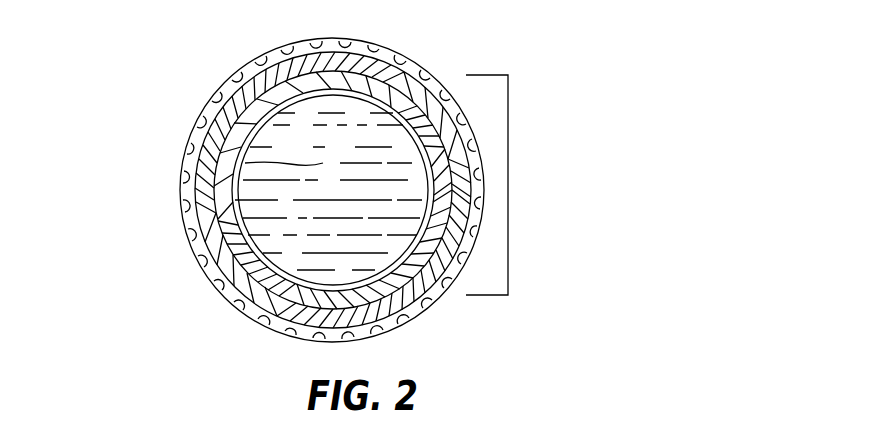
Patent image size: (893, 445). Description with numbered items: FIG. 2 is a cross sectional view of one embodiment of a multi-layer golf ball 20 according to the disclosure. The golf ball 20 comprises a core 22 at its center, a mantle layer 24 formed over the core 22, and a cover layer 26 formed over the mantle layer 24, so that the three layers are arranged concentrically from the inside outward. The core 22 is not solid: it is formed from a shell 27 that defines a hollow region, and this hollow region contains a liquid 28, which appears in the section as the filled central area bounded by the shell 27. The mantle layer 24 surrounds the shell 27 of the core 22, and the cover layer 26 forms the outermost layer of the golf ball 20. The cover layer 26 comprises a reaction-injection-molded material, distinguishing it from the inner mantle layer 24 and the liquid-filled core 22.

The golf ball 20 is at (174, 68).
The core 22 is at (508, 168).
The mantle layer 24 is at (390, 312).
The cover layer 26 is at (200, 256).
The shell 27 is at (407, 97).
The liquid 28 is at (314, 276).